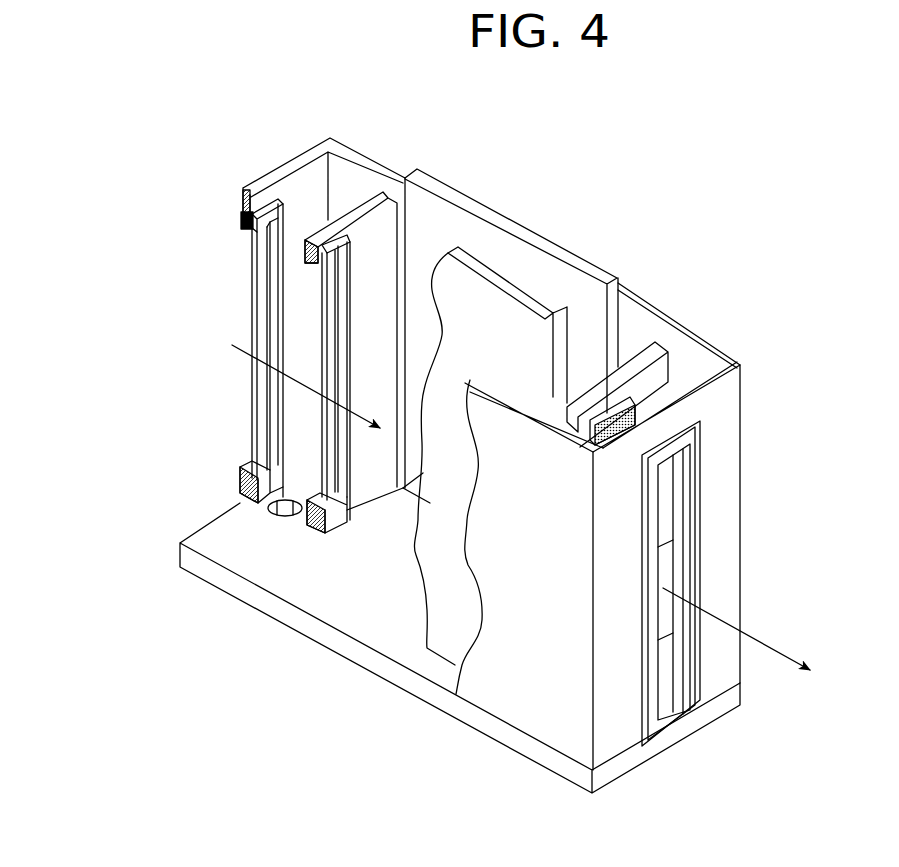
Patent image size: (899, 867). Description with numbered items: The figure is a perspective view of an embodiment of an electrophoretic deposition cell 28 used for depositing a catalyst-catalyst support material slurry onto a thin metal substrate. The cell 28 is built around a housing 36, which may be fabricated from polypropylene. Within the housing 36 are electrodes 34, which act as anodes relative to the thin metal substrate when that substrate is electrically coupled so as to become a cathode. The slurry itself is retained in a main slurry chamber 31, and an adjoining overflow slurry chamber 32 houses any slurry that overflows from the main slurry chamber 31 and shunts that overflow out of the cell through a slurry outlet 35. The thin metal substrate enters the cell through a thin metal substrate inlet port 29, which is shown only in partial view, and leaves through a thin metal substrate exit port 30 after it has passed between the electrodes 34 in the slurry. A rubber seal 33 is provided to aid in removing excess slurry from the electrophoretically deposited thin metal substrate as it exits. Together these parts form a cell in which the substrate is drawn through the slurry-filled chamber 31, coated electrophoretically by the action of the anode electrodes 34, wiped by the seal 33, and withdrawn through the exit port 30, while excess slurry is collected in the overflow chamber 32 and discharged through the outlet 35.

The electrophoretic deposition cell 28 is at (565, 444).
The thin metal substrate inlet port 29 is at (243, 320).
The thin metal substrate exit port 30 is at (658, 548).
The main slurry chamber 31 is at (400, 514).
The overflow slurry chamber 32 is at (345, 187).
The rubber seal 33 is at (628, 408).
The electrodes 34 is at (551, 301).
The slurry outlet 35 is at (150, 506).
The housing 36 is at (745, 482).